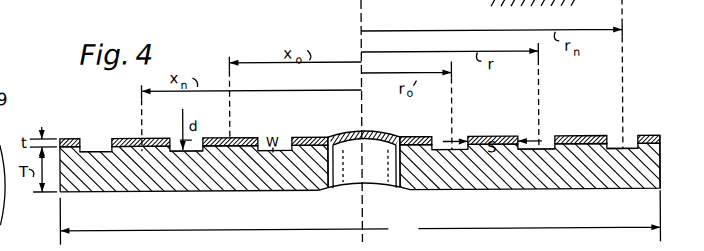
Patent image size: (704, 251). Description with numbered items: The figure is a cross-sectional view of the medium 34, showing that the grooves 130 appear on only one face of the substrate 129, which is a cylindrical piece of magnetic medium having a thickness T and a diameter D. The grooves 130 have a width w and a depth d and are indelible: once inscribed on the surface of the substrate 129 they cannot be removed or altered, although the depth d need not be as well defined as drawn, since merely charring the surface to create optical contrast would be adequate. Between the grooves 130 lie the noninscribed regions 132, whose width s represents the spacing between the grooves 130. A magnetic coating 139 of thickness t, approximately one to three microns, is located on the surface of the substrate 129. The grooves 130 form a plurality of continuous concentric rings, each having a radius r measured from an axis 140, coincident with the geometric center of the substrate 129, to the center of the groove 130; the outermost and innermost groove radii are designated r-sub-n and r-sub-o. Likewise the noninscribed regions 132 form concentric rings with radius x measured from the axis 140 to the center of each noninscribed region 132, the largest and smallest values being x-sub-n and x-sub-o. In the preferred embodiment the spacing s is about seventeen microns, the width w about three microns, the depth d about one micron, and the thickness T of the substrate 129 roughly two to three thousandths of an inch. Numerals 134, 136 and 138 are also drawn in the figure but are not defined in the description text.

The medium 34 is at (216, 197).
The substrate 129 is at (660, 184).
The grooves 130 is at (110, 152).
The noninscribed regions 132 is at (135, 138).
The central hub 134 is at (374, 185).
The outermost land 136 is at (68, 137).
The hub cover layer 138 is at (328, 138).
The magnetic coating 139 is at (95, 150).
The axis 140 is at (360, 21).